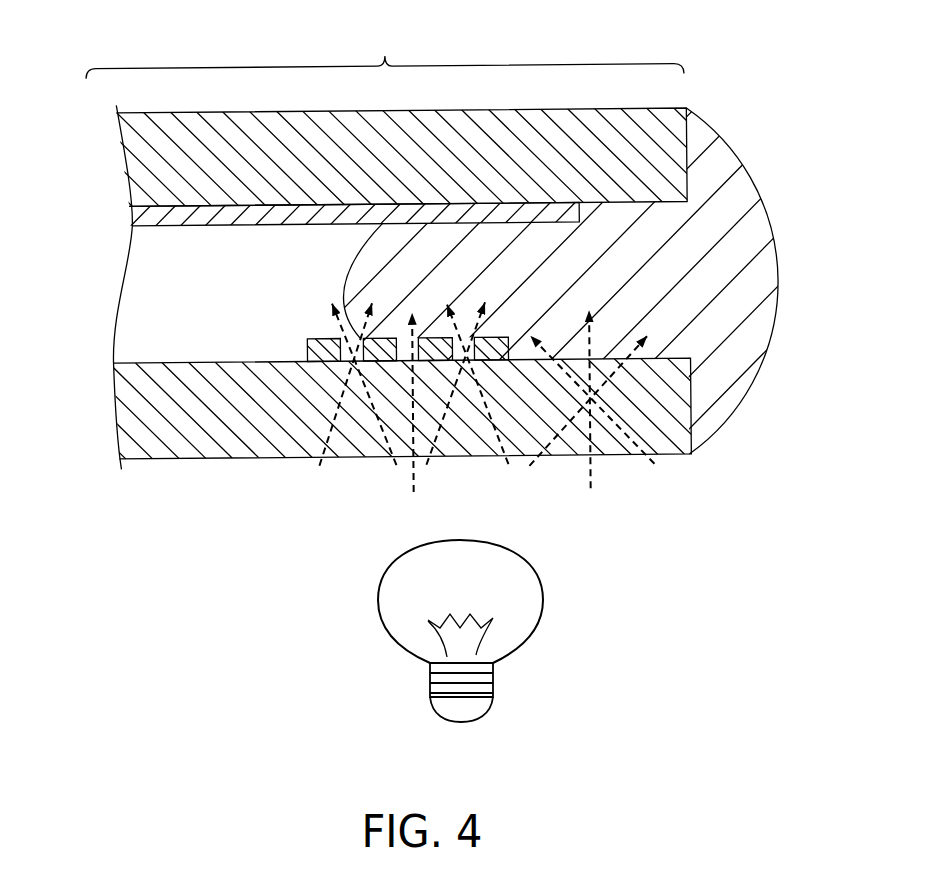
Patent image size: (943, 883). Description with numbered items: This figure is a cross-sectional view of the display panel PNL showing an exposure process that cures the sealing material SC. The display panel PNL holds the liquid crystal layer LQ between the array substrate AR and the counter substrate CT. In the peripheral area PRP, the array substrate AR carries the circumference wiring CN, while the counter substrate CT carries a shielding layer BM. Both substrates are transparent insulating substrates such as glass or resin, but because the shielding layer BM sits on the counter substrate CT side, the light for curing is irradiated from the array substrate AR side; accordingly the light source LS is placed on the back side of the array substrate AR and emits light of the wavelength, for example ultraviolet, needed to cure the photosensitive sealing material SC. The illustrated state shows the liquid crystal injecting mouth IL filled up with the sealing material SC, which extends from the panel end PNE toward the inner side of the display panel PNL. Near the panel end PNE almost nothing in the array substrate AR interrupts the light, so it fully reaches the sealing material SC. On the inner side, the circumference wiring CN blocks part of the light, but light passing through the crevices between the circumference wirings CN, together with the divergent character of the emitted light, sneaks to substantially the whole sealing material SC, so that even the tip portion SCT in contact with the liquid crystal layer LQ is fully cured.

The peripheral area PRP is at (385, 54).
The display panel PNL is at (692, 106).
The sealing material SC is at (717, 162).
The liquid crystal injecting mouth IL is at (657, 322).
The counter substrate CT is at (109, 137).
The shielding layer BM is at (131, 215).
The liquid crystal layer LQ is at (140, 291).
The tip portion SCT is at (333, 276).
The array substrate AR is at (110, 415).
The circumference wiring CN is at (495, 355).
The panel end PNE is at (690, 461).
The light source LS is at (398, 596).